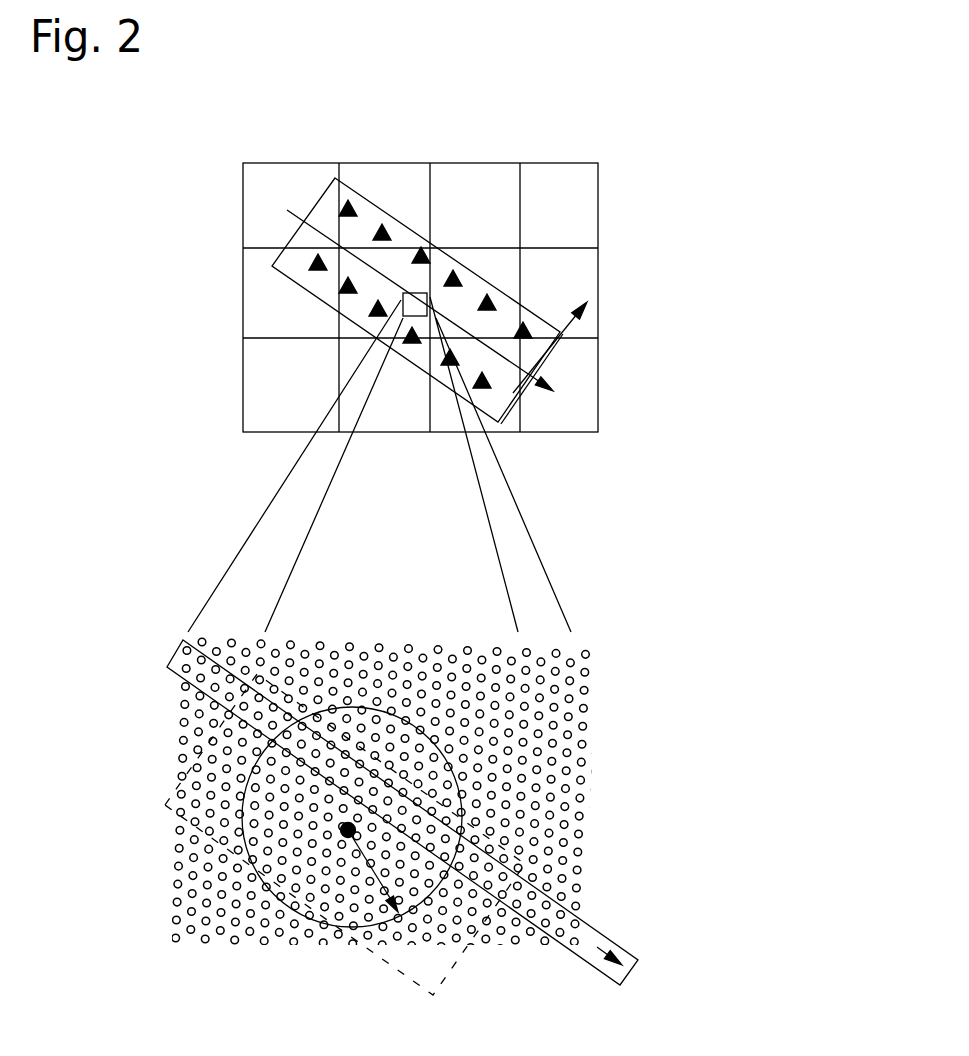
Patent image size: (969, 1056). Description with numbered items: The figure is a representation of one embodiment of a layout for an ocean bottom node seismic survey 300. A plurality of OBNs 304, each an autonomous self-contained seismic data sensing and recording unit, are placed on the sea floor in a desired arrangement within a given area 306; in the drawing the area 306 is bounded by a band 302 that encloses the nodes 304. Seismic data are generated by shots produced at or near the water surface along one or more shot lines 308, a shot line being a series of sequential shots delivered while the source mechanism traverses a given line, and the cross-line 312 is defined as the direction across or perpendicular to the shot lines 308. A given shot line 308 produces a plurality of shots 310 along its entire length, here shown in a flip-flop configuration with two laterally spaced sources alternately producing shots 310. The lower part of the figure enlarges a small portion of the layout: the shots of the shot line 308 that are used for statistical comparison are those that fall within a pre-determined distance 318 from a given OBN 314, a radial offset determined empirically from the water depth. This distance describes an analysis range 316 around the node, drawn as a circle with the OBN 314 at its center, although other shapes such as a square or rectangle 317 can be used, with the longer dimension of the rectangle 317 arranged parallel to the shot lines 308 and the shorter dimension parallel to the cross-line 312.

The seismic survey 300 is at (125, 188).
The scan swath 302 is at (308, 293).
The ocean bottom nodes (OBNs) 304 is at (345, 210).
The given area 306 is at (292, 235).
The shot line 308 is at (507, 362).
The shots 310 is at (210, 688).
The cross-line 312 is at (560, 347).
The given OBN 314 is at (342, 840).
The analysis range 316 is at (257, 878).
The rectangular analysis range 317 is at (435, 988).
The pre-determined distance 318 is at (380, 882).